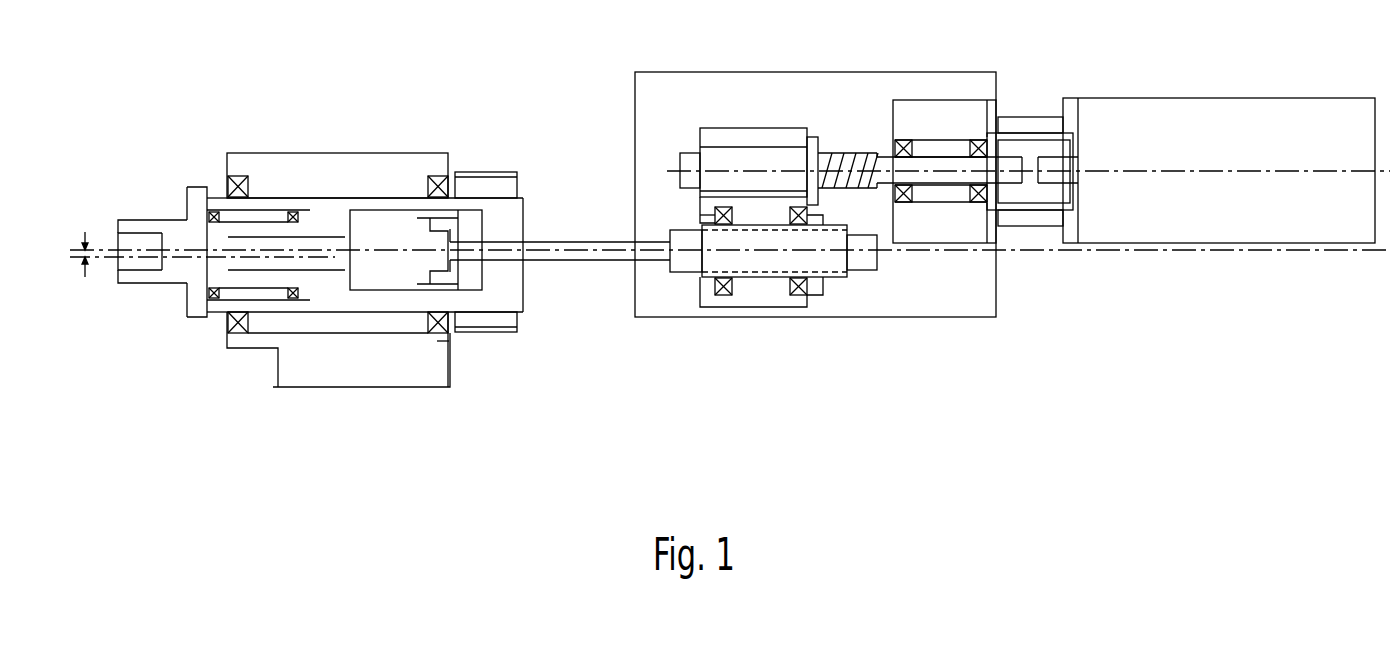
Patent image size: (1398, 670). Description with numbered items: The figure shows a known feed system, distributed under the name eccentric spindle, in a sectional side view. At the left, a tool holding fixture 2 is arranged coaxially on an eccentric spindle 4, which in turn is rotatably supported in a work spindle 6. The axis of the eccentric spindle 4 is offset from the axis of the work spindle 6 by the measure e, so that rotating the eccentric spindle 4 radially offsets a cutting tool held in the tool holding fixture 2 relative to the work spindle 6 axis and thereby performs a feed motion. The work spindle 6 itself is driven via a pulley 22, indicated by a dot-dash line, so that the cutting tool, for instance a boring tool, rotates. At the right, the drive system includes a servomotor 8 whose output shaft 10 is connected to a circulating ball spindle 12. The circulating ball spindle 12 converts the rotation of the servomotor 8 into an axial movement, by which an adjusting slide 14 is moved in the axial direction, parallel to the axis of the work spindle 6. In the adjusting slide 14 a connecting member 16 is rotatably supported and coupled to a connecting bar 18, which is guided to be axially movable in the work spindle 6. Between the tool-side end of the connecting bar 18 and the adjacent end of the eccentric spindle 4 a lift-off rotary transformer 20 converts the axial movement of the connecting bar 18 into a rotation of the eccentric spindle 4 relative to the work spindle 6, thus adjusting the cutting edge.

The tool holding fixture 2 is at (137, 240).
The eccentric spindle 4 is at (163, 277).
The work spindle 6 is at (318, 205).
The servomotor 8 is at (1272, 102).
The output shaft 10 is at (1052, 167).
The circulating ball spindle 12 is at (858, 150).
The adjusting slide 14 is at (867, 263).
The connecting member 16 is at (763, 237).
The connecting bar 18 is at (575, 247).
The lift-off rotary transformer 20 is at (386, 283).
The pulley 22 is at (500, 183).
The measure e is at (84, 280).